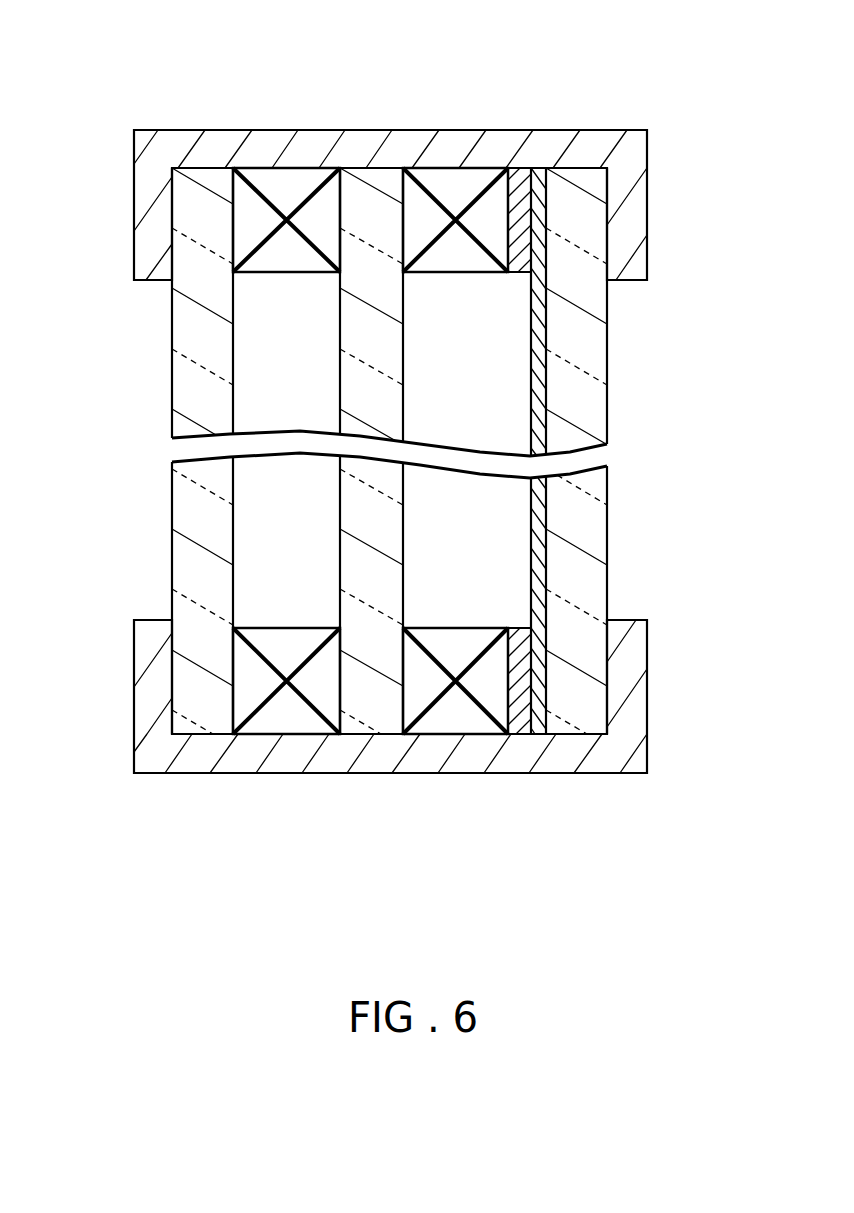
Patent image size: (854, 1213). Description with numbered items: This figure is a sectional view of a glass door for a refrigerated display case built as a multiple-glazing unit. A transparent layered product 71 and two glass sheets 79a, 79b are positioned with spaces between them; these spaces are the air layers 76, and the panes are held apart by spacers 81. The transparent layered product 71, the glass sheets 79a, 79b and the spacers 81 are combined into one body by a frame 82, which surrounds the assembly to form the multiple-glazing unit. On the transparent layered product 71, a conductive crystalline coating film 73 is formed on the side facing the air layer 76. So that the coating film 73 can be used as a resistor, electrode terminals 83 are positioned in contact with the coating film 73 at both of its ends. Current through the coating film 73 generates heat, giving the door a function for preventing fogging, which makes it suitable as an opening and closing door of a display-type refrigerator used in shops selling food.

The transparent layered product 71 is at (603, 501).
The conductive crystalline coating film 73 is at (538, 541).
The air layer 76 is at (268, 370).
The glass sheet 79a is at (358, 502).
The glass sheet 79b is at (187, 557).
The spacer 81 is at (287, 185).
The frame 82 is at (176, 140).
The electrode terminal 83 is at (520, 185).